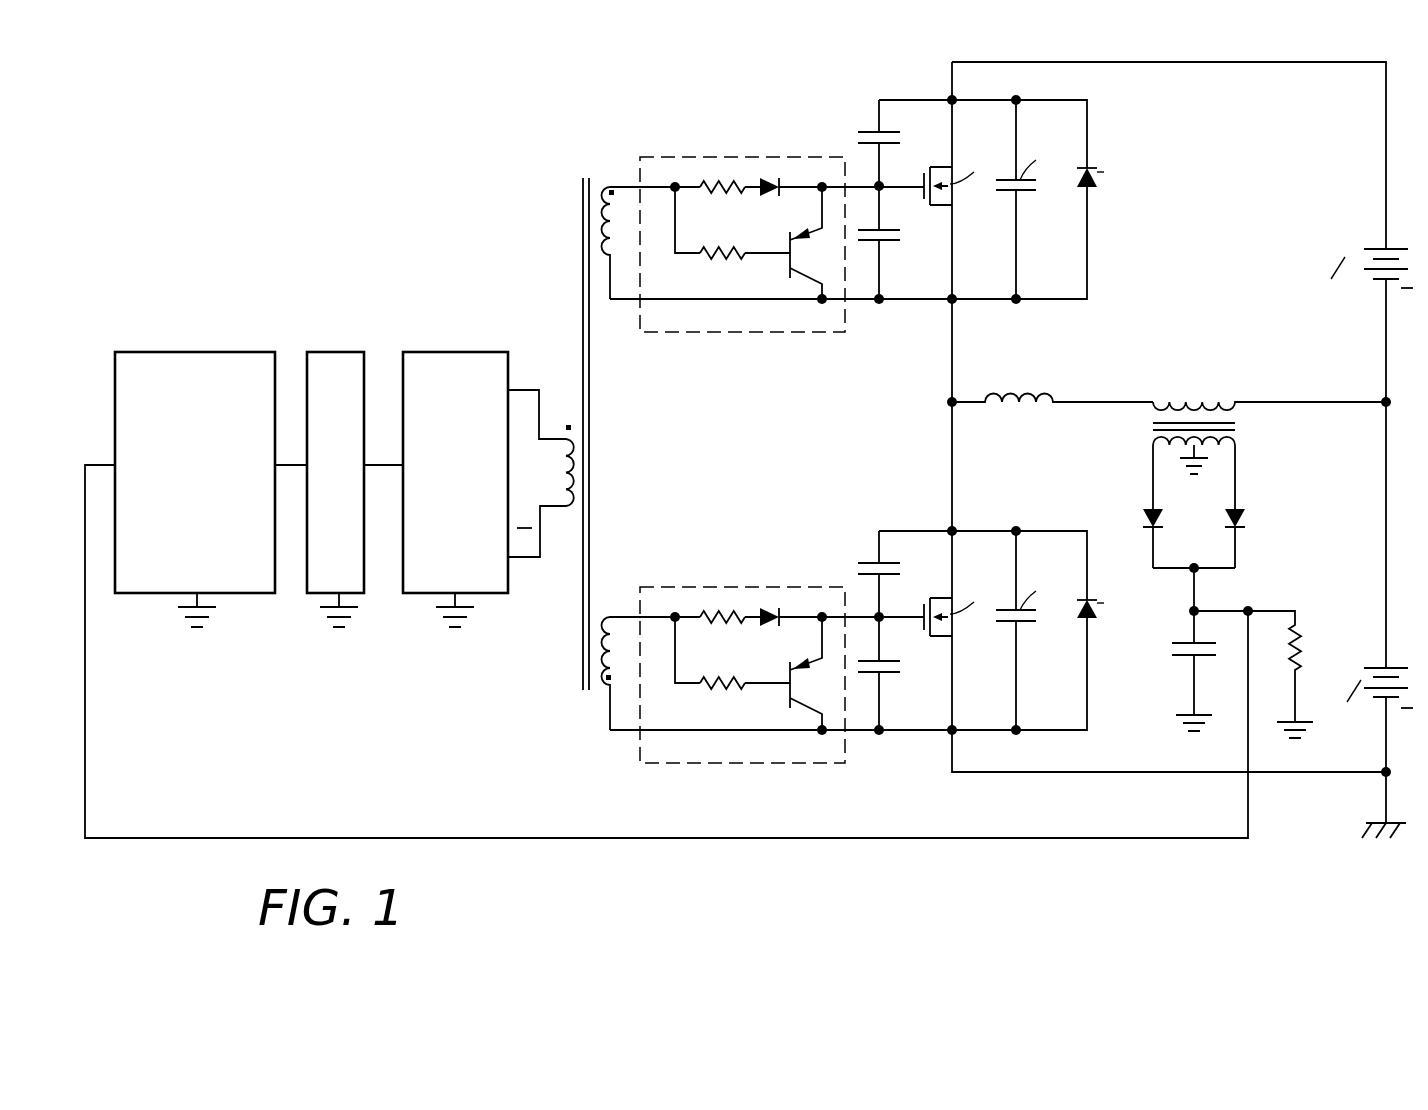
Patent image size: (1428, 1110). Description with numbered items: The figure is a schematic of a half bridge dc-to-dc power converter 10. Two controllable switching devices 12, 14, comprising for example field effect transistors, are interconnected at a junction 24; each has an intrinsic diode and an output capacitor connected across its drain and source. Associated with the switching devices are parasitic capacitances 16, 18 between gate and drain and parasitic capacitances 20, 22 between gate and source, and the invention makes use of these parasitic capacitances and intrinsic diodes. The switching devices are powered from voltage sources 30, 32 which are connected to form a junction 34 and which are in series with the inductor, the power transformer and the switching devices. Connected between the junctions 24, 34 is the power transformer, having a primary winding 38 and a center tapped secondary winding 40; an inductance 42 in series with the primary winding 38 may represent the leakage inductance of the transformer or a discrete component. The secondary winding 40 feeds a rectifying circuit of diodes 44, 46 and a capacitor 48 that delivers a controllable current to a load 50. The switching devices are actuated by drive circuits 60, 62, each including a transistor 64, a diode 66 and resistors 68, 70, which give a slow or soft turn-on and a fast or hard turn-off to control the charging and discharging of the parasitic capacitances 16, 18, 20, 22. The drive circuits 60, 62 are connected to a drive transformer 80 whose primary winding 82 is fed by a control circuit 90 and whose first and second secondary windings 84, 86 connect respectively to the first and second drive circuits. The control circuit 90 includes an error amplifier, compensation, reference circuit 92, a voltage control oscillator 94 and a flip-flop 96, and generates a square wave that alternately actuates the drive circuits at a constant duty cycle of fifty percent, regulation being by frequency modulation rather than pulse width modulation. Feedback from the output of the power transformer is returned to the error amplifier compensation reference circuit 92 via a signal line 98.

The dc-to-dc power converter 10 is at (772, 466).
The switching device 12 is at (1164, 114).
The switching device 14 is at (1069, 486).
The parasitic capacitance 16 is at (866, 131).
The parasitic capacitance 18 is at (866, 562).
The parasitic capacitance 20 is at (888, 244).
The parasitic capacitance 22 is at (888, 676).
The junction 24 is at (948, 401).
The voltage source 30 is at (1378, 247).
The voltage source 32 is at (1376, 666).
The junction 34 is at (1390, 401).
The primary winding 38 is at (1188, 400).
The secondary winding 40 is at (1164, 448).
The inductance 42 is at (1020, 392).
The diode 44 is at (1160, 519).
The diode 46 is at (1240, 520).
The capacitor 48 is at (1185, 658).
The load 50 is at (1318, 630).
The drive circuit 60 is at (730, 146).
The drive circuit 62 is at (731, 576).
The transistor 64 is at (786, 266).
The diode 66 is at (768, 198).
The resistor 68 is at (718, 196).
The resistor 70 is at (708, 258).
The drive transformer 80 is at (610, 447).
The primary winding 82 is at (562, 466).
The first secondary winding 84 is at (596, 222).
The second secondary winding 86 is at (596, 640).
The control circuit 90 is at (313, 422).
The error amplifier, compensation, reference circuit 92 is at (164, 362).
The voltage control oscillator 94 is at (336, 357).
The flip-flop 96 is at (466, 368).
The signal line 98 is at (482, 836).